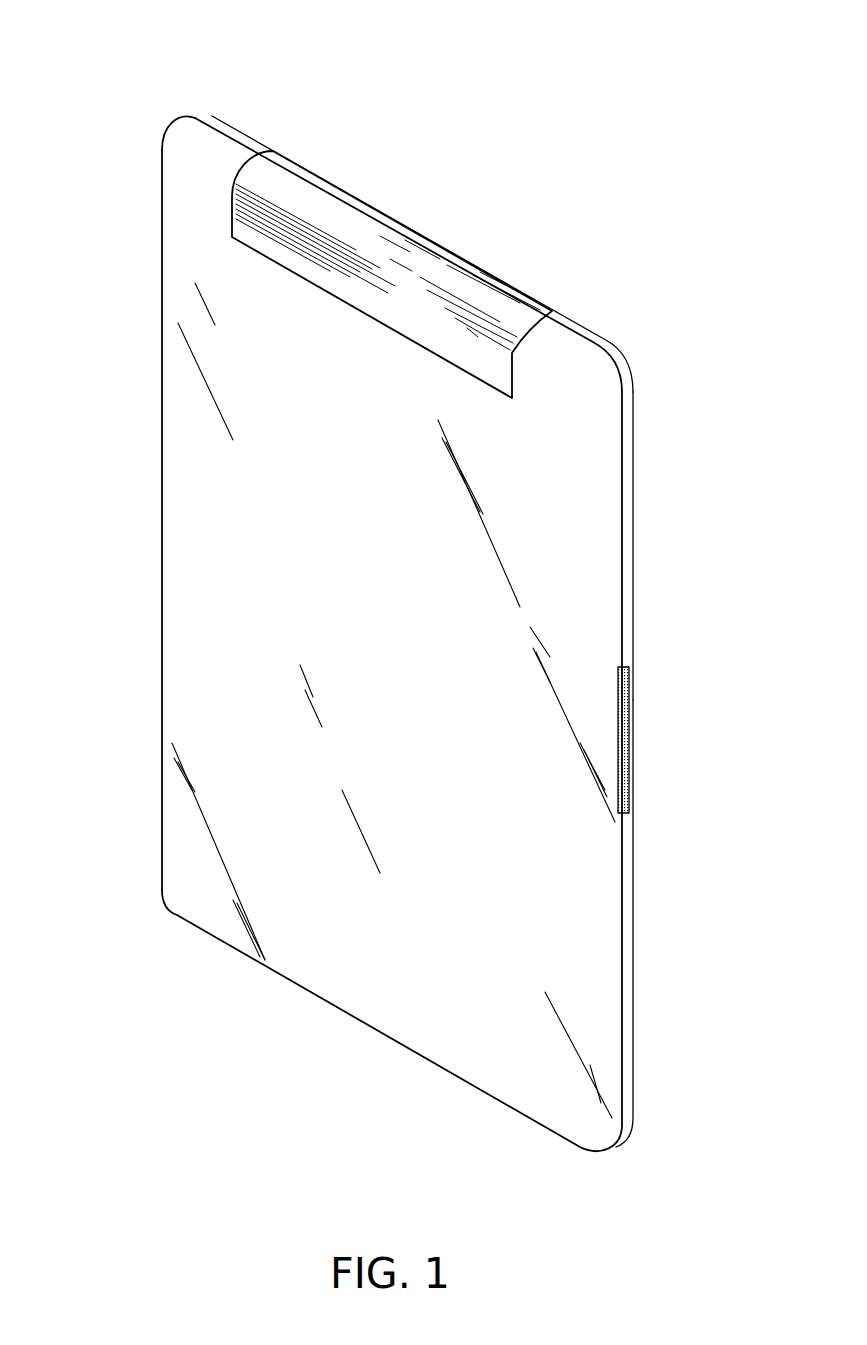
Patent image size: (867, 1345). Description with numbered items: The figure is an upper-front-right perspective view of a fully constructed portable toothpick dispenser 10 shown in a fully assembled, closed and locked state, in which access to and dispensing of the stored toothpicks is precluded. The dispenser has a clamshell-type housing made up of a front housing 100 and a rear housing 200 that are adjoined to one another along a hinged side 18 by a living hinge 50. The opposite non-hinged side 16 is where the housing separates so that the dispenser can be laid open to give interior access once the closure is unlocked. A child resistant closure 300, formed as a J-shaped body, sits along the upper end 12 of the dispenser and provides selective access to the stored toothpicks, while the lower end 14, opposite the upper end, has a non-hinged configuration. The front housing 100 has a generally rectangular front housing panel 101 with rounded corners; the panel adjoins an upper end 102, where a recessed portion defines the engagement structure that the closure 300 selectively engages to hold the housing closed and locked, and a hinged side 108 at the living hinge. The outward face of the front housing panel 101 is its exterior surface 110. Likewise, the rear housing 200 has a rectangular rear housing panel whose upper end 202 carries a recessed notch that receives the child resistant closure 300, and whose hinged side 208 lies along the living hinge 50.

The portable toothpick dispenser 10 is at (592, 182).
The upper end 12 is at (253, 142).
The lower end 14 is at (480, 1092).
The non-hinged side 16 is at (162, 542).
The hinged side 18 is at (631, 912).
The living hinge 50 is at (630, 713).
The front housing 100 is at (213, 342).
The front housing panel 101 is at (248, 543).
The upper end of front housing panel 102 is at (195, 132).
The hinged side of front housing panel 108 is at (616, 546).
The exterior surface 110 is at (402, 642).
The rear housing 200 is at (613, 347).
The upper end of rear housing panel 202 is at (215, 122).
The hinged side of rear housing panel 208 is at (627, 593).
The child resistant closure 300 is at (395, 218).